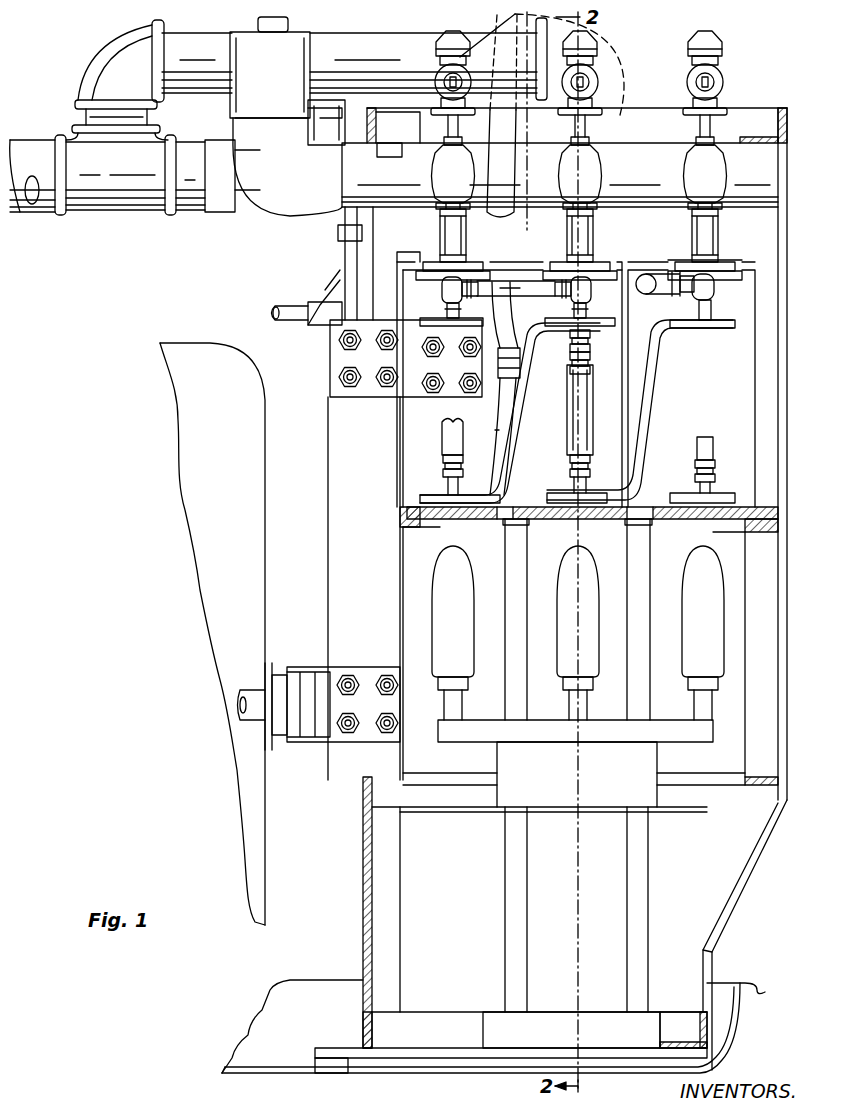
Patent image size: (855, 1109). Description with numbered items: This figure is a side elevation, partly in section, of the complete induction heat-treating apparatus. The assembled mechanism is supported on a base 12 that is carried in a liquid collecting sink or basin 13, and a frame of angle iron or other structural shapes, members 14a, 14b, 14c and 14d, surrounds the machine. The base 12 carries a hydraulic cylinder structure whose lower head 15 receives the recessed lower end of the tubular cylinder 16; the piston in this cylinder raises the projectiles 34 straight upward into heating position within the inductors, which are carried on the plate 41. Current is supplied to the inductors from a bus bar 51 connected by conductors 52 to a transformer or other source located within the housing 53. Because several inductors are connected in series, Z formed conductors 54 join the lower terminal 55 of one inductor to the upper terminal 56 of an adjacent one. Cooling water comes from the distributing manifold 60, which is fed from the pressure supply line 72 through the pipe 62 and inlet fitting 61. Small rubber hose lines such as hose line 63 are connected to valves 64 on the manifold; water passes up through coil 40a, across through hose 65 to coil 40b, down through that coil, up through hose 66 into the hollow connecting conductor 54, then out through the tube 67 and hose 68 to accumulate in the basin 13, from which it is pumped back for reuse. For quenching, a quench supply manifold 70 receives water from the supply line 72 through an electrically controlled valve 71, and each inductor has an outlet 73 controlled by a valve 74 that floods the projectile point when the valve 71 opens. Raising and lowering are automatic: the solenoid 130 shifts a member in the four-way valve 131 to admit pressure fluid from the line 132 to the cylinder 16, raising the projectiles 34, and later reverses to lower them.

The base 12 is at (337, 1050).
The liquid collecting sink or basin 13 is at (733, 1032).
The frame member 14a is at (363, 890).
The frame member 14b is at (777, 806).
The frame member 14c is at (778, 548).
The frame member 14d is at (775, 112).
The lower head 15 is at (545, 1035).
The tubular cylinder 16 is at (590, 948).
The projectiles 34 is at (696, 563).
The inductor coil 40a is at (412, 282).
The inductor coil 40b is at (612, 282).
The plate 41 is at (757, 507).
The bus bar 51 is at (400, 378).
The conductors 52 is at (340, 630).
The housing 53 is at (258, 832).
The Z formed conductor 54 is at (513, 408).
The lower terminal 55 is at (590, 492).
The upper terminal 56 is at (718, 320).
The distributing header or manifold 60 is at (635, 124).
The inlet fitting 61 is at (604, 83).
The pipe 62 is at (372, 37).
The rubber hose line 63 is at (505, 162).
The valve 64 is at (438, 68).
The hose 65 is at (487, 280).
The hose 66 is at (584, 428).
The tube 67 is at (498, 435).
The hose 68 is at (517, 283).
The quench supply manifold 70 is at (555, 135).
The electrically controlled valve 71 is at (250, 228).
The pressure supply line 72 is at (50, 205).
The outlet 73 is at (594, 236).
The valve 74 is at (594, 160).
The solenoid 130 is at (343, 132).
The four-way valve 131 is at (348, 257).
The line 132 is at (296, 325).